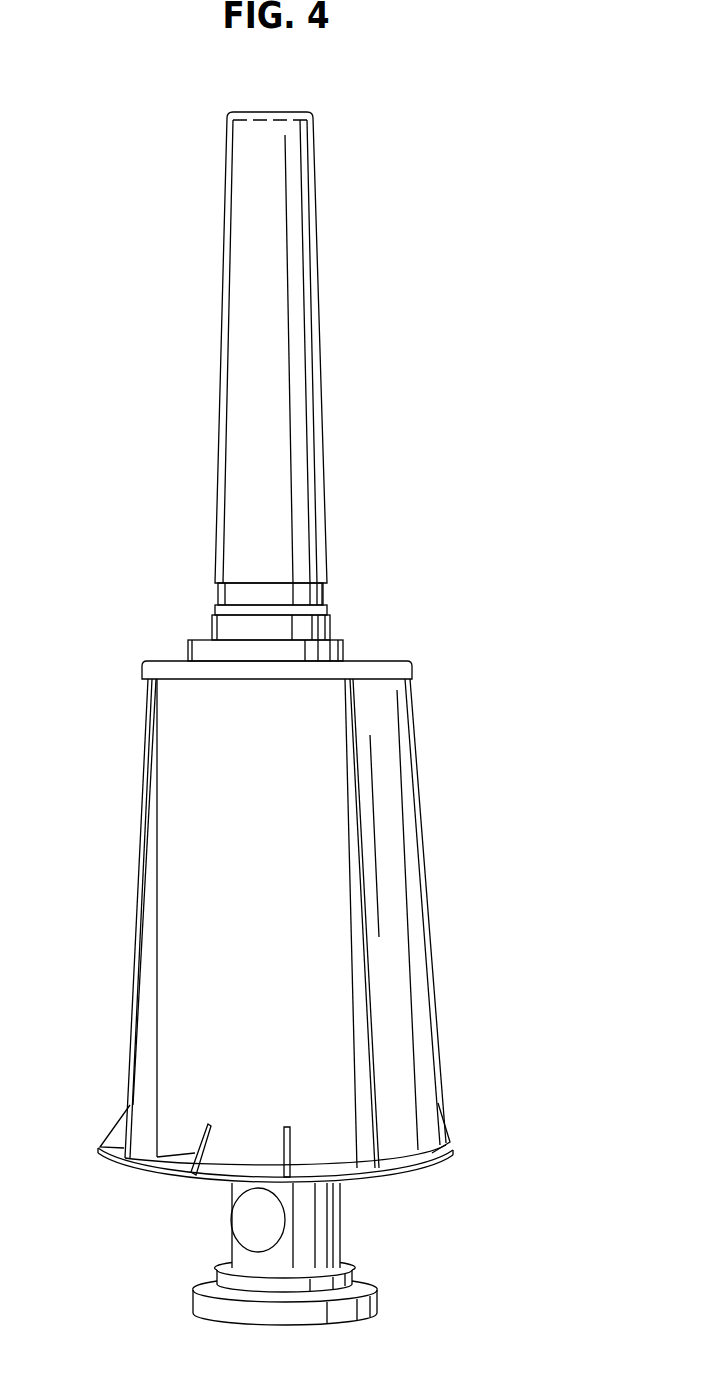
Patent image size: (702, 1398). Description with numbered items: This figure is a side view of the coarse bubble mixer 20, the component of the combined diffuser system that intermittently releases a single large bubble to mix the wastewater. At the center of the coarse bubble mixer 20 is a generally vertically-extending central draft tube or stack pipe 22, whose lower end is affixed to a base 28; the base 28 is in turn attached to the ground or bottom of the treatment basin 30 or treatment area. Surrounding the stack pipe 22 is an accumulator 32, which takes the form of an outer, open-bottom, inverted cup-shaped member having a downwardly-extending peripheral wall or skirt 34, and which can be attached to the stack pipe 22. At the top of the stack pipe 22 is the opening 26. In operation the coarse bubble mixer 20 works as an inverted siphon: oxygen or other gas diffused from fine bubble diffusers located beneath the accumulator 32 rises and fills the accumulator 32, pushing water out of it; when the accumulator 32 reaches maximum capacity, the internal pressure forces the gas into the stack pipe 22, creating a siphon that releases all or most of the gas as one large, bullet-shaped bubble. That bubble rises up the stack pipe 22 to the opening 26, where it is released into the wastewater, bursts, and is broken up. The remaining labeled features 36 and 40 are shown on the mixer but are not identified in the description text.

The coarse bubble mixer 20 is at (122, 414).
The stack pipe 22 is at (318, 420).
The opening 26 is at (283, 112).
The base 28 is at (377, 1297).
The treatment basin 30 is at (445, 1334).
The accumulator 32 is at (500, 864).
The skirt 34 is at (430, 1152).
The flange 36 is at (148, 1170).
The collar 40 is at (167, 661).